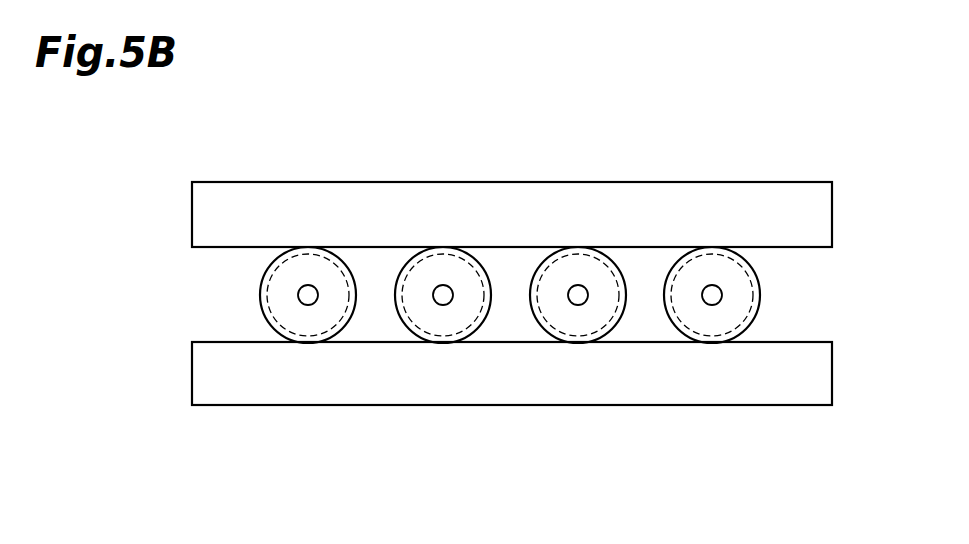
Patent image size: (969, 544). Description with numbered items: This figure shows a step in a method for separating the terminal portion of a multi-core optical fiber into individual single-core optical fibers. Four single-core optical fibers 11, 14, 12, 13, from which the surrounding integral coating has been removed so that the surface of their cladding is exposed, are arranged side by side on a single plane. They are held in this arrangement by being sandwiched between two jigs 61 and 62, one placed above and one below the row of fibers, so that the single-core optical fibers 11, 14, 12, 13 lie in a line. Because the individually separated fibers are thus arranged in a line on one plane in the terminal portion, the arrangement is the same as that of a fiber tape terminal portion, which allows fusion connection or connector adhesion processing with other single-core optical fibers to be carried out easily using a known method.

The jig 61 is at (295, 182).
The jig 62 is at (295, 405).
The single-core optical fiber 11 is at (350, 262).
The single-core optical fiber 14 is at (485, 232).
The single-core optical fiber 12 is at (620, 232).
The single-core optical fiber 13 is at (754, 232).